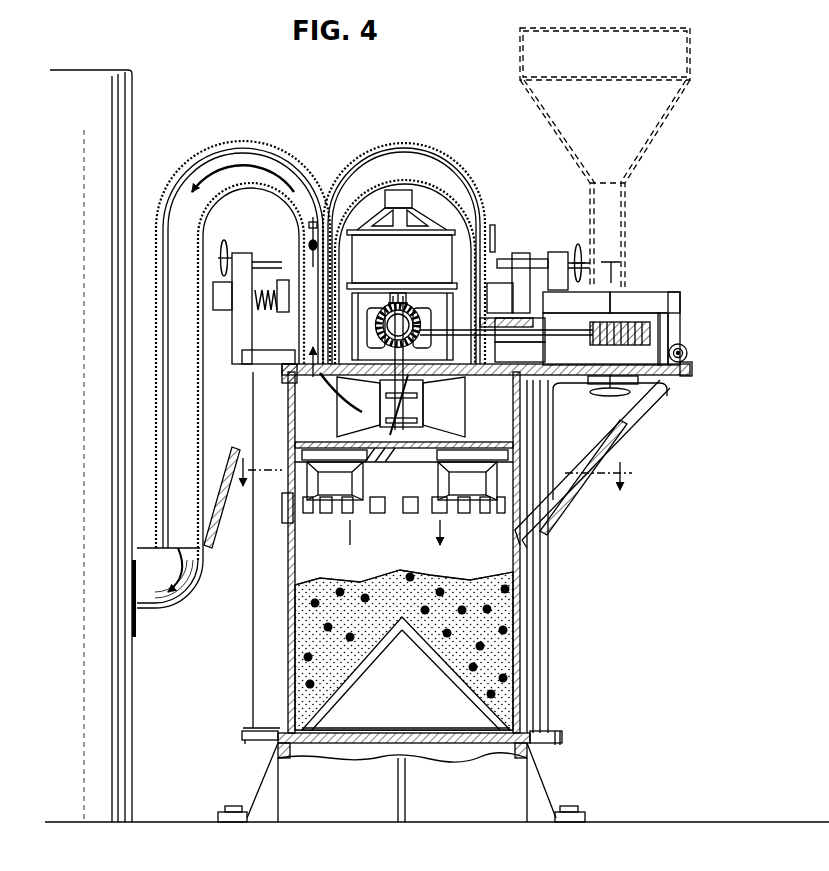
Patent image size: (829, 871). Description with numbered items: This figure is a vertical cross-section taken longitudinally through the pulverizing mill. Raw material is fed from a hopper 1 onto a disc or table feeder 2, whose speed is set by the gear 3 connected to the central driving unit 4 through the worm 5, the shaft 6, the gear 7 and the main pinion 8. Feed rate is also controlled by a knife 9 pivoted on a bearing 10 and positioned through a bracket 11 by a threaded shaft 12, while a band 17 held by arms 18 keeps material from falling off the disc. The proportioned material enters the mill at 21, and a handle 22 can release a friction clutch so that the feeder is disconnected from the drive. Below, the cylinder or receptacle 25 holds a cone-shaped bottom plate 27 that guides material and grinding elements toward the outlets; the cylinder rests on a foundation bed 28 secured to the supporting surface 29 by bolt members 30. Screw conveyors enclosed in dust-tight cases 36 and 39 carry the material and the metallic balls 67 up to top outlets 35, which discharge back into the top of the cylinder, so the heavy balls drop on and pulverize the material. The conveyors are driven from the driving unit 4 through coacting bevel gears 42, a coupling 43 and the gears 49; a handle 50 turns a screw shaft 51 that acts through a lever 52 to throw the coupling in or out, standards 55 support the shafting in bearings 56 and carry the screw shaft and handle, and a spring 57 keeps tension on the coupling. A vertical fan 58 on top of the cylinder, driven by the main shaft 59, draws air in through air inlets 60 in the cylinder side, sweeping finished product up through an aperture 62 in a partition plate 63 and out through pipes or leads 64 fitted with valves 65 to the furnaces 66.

The hopper 1 is at (650, 113).
The feeder 2 is at (627, 317).
The gear 3 is at (687, 371).
The central driving unit 4 is at (402, 239).
The worm 5 is at (673, 413).
The shaft 6 is at (555, 386).
The gear 7 is at (462, 262).
The main pinion 8 is at (423, 270).
The knife 9 is at (623, 295).
The bearing 10 is at (680, 337).
The bracket 11 is at (686, 350).
The shaft 12 is at (681, 368).
The band 17 is at (633, 267).
The arms 18 is at (665, 337).
The mill entry 21 is at (537, 530).
The handle 22 is at (628, 383).
The cylinder or receptacle 25 is at (520, 587).
The cone-shaped bottom plate 27 is at (440, 650).
The foundation bed 28 is at (525, 755).
The supporting surface 29 is at (430, 813).
The bolt members 30 is at (232, 805).
The top outlets 35 is at (387, 528).
The dust-tight case 36 is at (548, 690).
The dust-tight case 39 is at (255, 635).
The bevel gears 42 is at (520, 330).
The coupling 43 is at (500, 287).
The gears 49 is at (372, 320).
The handle 50 is at (224, 240).
The screw shaft 51 is at (522, 280).
The lever 52 is at (523, 259).
The standards 55 is at (242, 320).
The bearings 56 is at (212, 297).
The spring 57 is at (263, 308).
The fan 58 is at (422, 406).
The main shaft 59 is at (402, 335).
The air inlets 60 is at (287, 513).
The aperture 62 is at (404, 467).
The partition plate 63 is at (478, 448).
The pipes or leads 64 is at (217, 438).
The valves 65 is at (315, 227).
The furnaces 66 is at (92, 446).
The metallic balls 67 is at (485, 648).